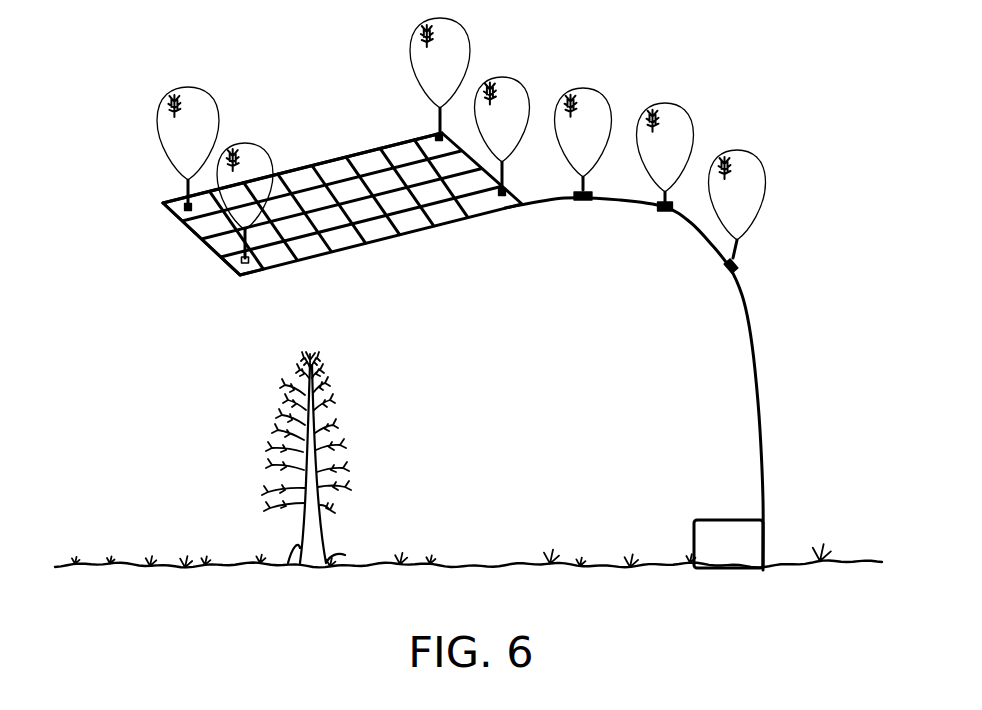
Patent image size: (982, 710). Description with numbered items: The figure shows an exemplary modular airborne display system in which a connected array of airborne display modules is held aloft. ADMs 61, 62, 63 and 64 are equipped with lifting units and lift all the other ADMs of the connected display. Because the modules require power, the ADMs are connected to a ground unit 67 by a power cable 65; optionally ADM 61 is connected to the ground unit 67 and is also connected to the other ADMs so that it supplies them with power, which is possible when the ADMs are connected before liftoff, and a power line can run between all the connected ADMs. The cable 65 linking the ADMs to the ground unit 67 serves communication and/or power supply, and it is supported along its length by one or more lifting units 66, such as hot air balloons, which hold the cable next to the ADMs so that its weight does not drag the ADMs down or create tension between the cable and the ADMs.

The ADM 61 is at (492, 215).
The ADM 62 is at (232, 284).
The ADM 63 is at (172, 227).
The ADM 64 is at (414, 131).
The power cable 65 is at (735, 354).
The lifting units 66 is at (604, 100).
The ground unit 67 is at (702, 528).